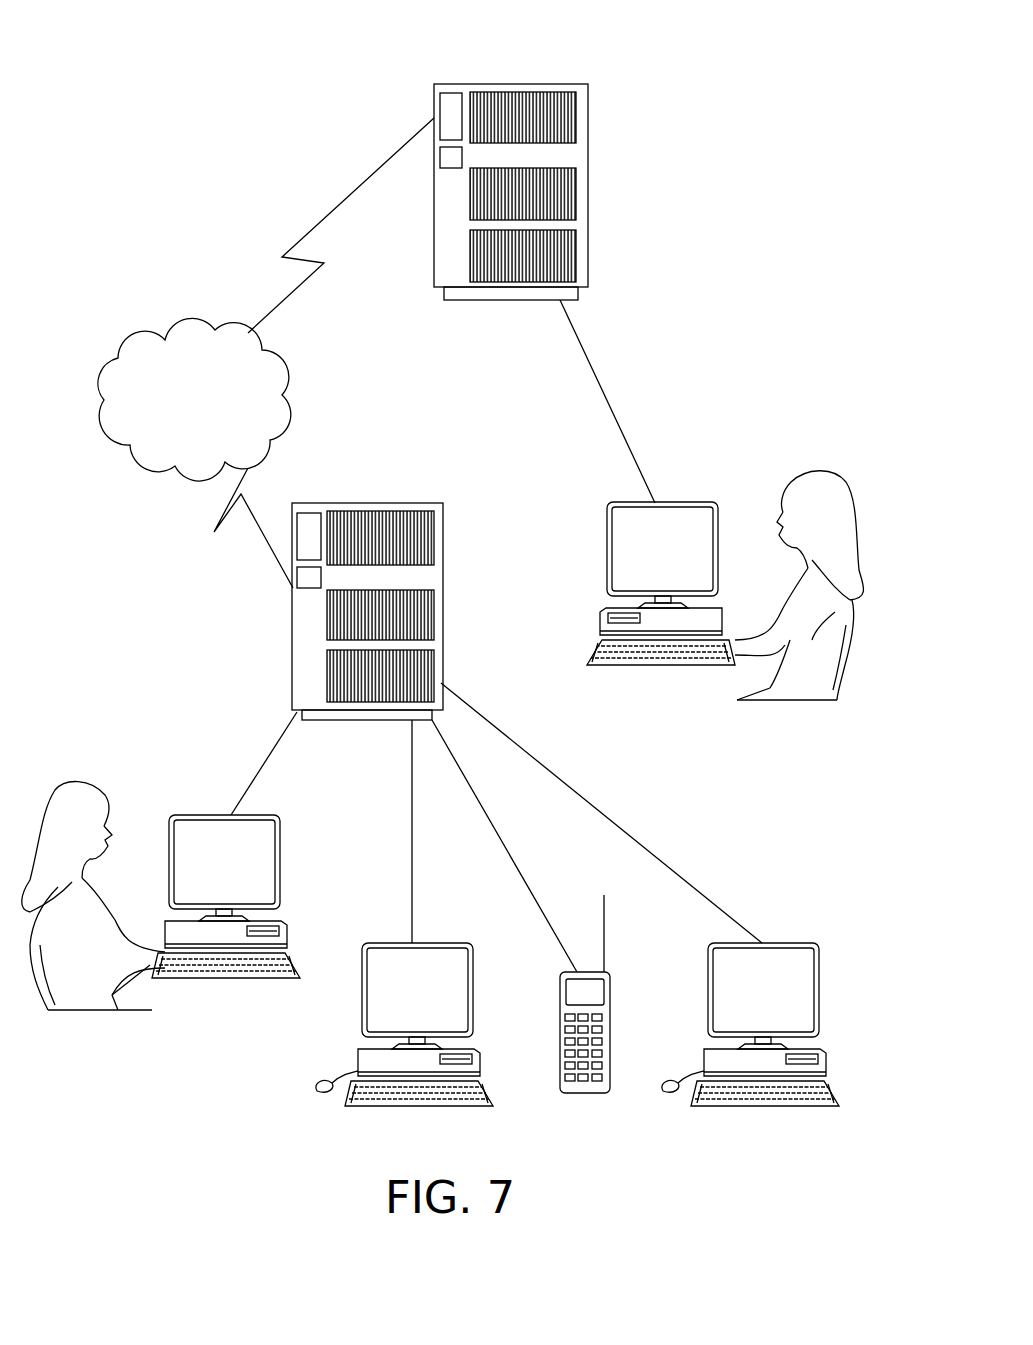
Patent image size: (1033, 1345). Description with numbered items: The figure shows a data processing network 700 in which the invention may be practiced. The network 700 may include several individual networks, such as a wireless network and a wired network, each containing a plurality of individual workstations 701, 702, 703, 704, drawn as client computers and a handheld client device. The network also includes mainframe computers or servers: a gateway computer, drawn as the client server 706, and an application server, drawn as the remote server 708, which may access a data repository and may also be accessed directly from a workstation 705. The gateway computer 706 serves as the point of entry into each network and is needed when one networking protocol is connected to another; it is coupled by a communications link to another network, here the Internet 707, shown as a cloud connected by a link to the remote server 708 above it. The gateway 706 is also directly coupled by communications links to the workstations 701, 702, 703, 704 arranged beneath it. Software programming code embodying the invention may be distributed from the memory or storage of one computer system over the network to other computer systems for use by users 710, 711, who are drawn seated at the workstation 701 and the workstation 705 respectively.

The data processing network 700 is at (431, 545).
The workstation 701 is at (226, 917).
The workstation 702 is at (404, 1045).
The workstation 703 is at (610, 1018).
The workstation 704 is at (750, 1045).
The workstation 705 is at (661, 605).
The gateway computer 706 is at (443, 558).
The Internet 707 is at (150, 343).
The remote server 708 is at (588, 137).
The user 710 is at (76, 787).
The user 711 is at (823, 488).